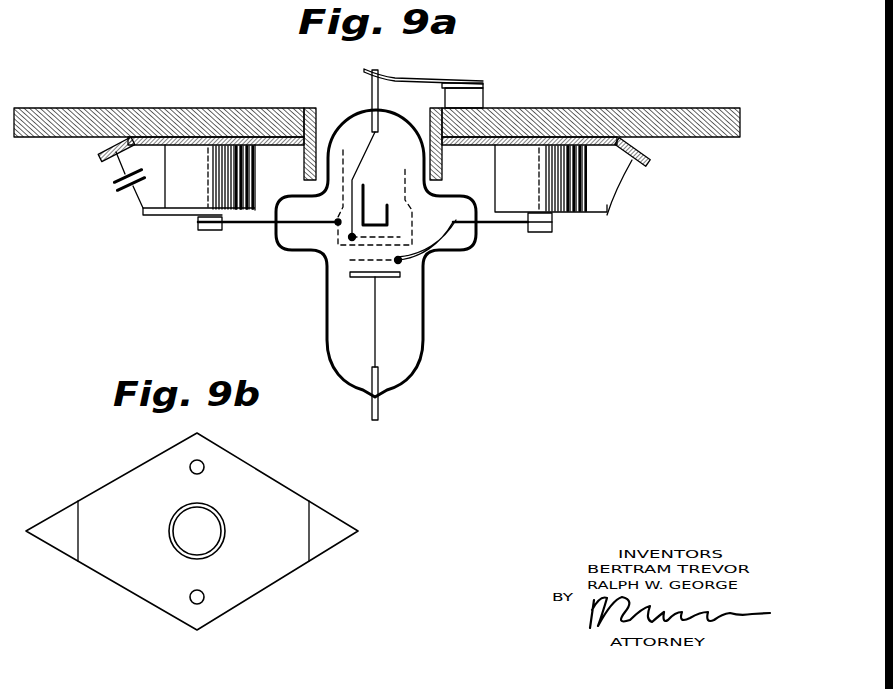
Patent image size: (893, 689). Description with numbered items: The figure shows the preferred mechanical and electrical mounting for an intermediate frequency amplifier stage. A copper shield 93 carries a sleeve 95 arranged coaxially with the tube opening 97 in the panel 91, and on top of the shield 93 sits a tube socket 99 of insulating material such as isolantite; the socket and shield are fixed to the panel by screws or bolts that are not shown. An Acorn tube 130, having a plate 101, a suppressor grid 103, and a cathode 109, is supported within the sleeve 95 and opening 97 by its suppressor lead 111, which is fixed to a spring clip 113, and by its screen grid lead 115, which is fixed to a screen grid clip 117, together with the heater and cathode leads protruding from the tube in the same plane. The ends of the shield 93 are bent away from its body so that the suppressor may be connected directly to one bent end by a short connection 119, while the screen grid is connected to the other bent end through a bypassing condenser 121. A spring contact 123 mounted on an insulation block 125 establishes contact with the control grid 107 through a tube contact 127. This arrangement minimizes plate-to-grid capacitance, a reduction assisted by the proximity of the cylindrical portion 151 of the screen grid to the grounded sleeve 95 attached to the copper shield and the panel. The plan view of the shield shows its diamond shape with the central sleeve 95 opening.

In FIG. 9A, the panel 91 is at (531, 110).
In FIG. 9A, the copper shield 93 is at (215, 137).
In FIG. 9B, the copper shield 93 is at (292, 491).
In FIG. 9A, the sleeve 95 is at (433, 146).
In FIG. 9B, the sleeve 95 is at (225, 531).
In FIG. 9A, the opening 97 is at (321, 110).
In FIG. 9A, the tube socket 99 is at (255, 190).
In FIG. 9A, the plate 101 is at (352, 276).
In FIG. 9A, the suppressor grid 103 is at (400, 263).
In FIG. 9A, the control grid 107 is at (365, 237).
In FIG. 9A, the cathode 109 is at (367, 197).
In FIG. 9A, the suppressor lead 111 is at (510, 225).
In FIG. 9A, the spring clip 113 is at (548, 232).
In FIG. 9A, the screen grid lead 115 is at (245, 225).
In FIG. 9A, the screen grid clip 117 is at (198, 230).
In FIG. 9A, the short connection 119 is at (617, 187).
In FIG. 9A, the bypassing condenser 121 is at (110, 183).
In FIG. 9A, the spring contact 123 is at (403, 78).
In FIG. 9A, the insulation block 125 is at (483, 98).
In FIG. 9A, the tube contact 127 is at (370, 72).
In FIG. 9A, the Acorn tube 130 is at (424, 305).
In FIG. 9A, the cylindrical portion of the screen grid 151 is at (404, 170).